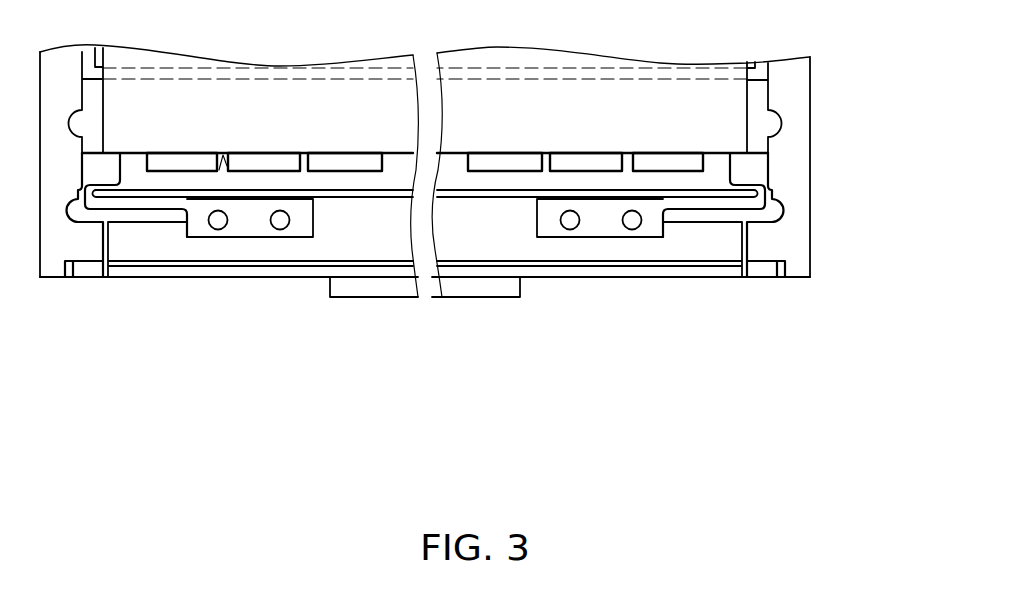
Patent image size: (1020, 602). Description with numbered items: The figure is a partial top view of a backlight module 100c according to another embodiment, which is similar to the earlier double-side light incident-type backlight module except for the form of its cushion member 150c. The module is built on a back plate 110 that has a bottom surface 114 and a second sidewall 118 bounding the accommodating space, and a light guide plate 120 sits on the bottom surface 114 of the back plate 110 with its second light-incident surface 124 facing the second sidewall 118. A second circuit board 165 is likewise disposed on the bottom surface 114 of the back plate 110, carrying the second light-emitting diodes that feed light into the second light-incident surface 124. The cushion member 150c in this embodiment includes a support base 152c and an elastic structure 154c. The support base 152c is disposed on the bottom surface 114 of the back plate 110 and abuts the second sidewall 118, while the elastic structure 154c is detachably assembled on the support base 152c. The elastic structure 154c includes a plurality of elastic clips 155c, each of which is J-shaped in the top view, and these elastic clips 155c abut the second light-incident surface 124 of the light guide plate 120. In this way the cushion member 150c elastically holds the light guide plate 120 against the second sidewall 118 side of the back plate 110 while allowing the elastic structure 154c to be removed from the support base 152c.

The backlight module 100c is at (473, 242).
The back plate 110 is at (426, 231).
The bottom surface 114 is at (776, 212).
The second sidewall 118 is at (482, 268).
The light guide plate 120 is at (723, 127).
The second light-incident surface 124 is at (222, 158).
The cushion member 150c is at (425, 319).
The support base 152c is at (195, 250).
The elastic structure 154c is at (258, 222).
The elastic clip 155c is at (137, 203).
The second circuit board 165 is at (325, 181).